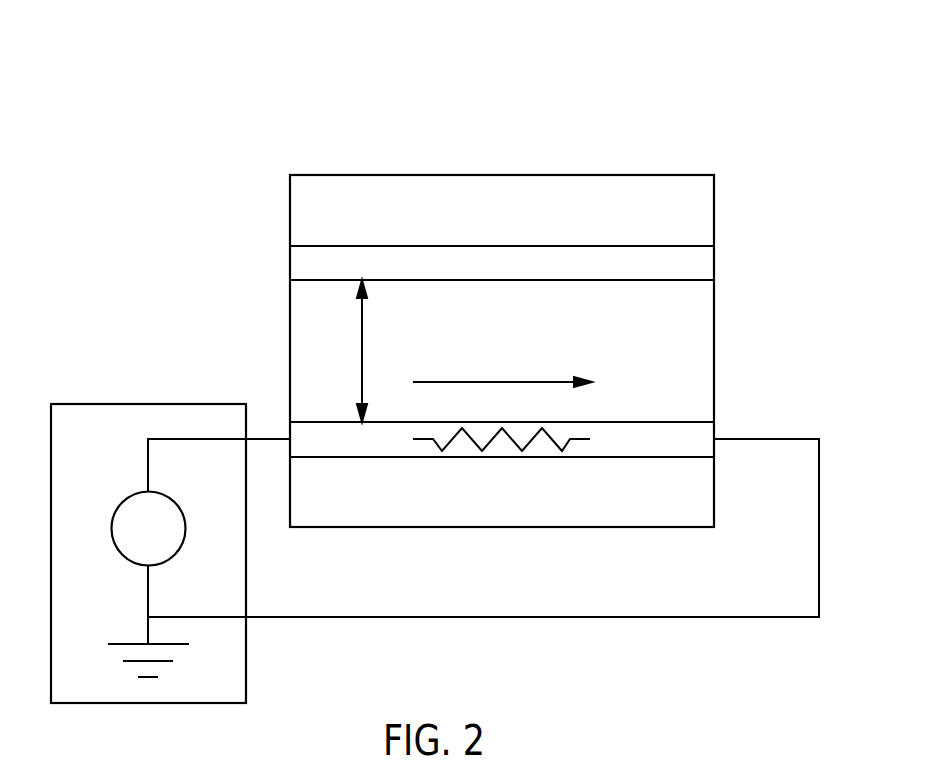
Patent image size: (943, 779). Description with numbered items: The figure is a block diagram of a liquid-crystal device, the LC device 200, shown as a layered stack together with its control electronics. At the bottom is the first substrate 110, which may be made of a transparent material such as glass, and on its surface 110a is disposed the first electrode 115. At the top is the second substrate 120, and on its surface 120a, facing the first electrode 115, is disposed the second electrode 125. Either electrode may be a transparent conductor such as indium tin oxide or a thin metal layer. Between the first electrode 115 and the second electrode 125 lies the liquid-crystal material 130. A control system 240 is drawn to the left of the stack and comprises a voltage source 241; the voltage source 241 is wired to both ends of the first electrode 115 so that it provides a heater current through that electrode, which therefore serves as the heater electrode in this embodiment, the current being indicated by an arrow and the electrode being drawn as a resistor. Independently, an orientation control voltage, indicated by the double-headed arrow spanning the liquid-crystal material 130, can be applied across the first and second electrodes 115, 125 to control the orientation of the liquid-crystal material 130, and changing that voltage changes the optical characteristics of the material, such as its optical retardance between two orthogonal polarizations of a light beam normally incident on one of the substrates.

The LC device 200 is at (527, 303).
The second substrate 120 is at (637, 185).
The surface of the second substrate 120a is at (670, 247).
The second electrode 125 is at (632, 268).
The liquid-crystal material 130 is at (695, 338).
The first electrode 115 is at (633, 437).
The surface of the first substrate 110a is at (670, 455).
The first substrate 110 is at (673, 513).
The control system 240 is at (101, 404).
The voltage source 241 is at (186, 528).